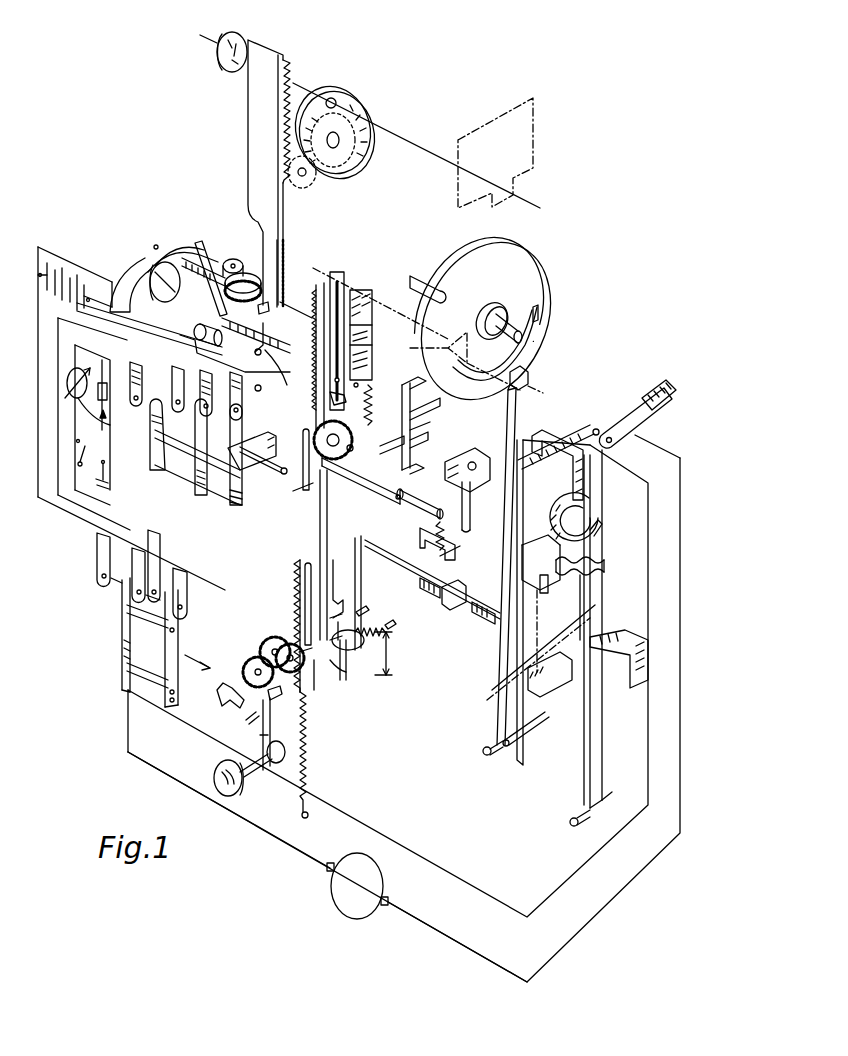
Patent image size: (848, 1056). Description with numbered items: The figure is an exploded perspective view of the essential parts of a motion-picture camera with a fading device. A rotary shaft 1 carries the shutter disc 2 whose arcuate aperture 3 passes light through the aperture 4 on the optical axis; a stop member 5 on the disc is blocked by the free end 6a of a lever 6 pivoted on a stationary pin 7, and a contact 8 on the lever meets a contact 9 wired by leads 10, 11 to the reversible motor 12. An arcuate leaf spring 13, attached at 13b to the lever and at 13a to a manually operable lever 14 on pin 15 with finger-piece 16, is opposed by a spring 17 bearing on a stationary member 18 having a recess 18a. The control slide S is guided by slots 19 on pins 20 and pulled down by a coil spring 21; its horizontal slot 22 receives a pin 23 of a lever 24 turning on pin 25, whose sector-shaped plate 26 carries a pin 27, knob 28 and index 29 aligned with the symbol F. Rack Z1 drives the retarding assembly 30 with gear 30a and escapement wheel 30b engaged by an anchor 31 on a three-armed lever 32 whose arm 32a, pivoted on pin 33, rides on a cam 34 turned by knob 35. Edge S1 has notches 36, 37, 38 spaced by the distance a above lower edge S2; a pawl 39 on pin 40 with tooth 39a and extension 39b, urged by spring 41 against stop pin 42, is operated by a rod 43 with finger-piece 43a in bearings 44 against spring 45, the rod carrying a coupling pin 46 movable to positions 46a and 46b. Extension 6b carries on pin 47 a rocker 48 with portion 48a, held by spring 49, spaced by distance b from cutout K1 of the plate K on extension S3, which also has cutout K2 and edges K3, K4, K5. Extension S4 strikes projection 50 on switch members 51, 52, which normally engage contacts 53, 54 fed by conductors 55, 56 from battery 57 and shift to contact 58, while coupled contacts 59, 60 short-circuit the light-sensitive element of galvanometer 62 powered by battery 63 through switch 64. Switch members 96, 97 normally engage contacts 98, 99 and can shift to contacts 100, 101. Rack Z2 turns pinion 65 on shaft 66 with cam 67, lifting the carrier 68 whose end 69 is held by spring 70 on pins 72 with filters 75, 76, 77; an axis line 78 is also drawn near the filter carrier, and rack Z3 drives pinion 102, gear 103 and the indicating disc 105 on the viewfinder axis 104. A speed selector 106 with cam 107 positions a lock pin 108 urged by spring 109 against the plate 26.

The rotary shaft 1 is at (428, 281).
The shutter disc 2 is at (538, 275).
The arcuate aperture 3 is at (540, 314).
The aperture 4 is at (430, 348).
The stop member 5 is at (528, 378).
The lever 6 is at (497, 551).
The free end of lever 6a is at (515, 395).
The extension of lever 6b is at (472, 476).
The stationary pin 7 is at (488, 757).
The electrical contact 8 is at (595, 428).
The contact 9 is at (632, 423).
The lead 10 is at (460, 881).
The lead 11 is at (468, 947).
The drive means 12 is at (350, 905).
The arcuate leaf spring 13 is at (578, 520).
The connection to lever 14 13a is at (596, 535).
The connection to lever 6 13b is at (586, 478).
The manually operable lever 14 is at (600, 715).
The stationary pin 15 is at (576, 818).
The finger-piece 16 is at (636, 638).
The spring 17 is at (592, 562).
The stationary member 18 is at (550, 553).
The recess 18a is at (552, 545).
The elongated vertical slots 19 is at (302, 440).
The stationary pins 20 is at (296, 490).
The coil spring 21 is at (310, 725).
The horizontal slot 22 is at (262, 392).
The pin 23 is at (263, 362).
The lever 24 is at (236, 330).
The pin 25 is at (256, 356).
The sector-shaped plate portion 26 is at (184, 256).
The pin 27 is at (200, 252).
The knob 28 is at (150, 262).
The index 29 is at (165, 298).
The retarding assembly 30 is at (262, 640).
The larger gear 30a is at (285, 640).
The escapement wheel 30b is at (248, 665).
The double-toothed anchor 31 is at (278, 698).
The lever 32 is at (268, 712).
The arm of lever 32a is at (260, 740).
The stationary pin 33 is at (246, 722).
The cam 34 is at (280, 756).
The knob 35 is at (246, 788).
The notch 36 is at (348, 636).
The notch 37 is at (340, 618).
The notch 38 is at (340, 595).
The pawl 39 is at (360, 585).
The tooth 39a is at (342, 680).
The integral extension 39b is at (416, 540).
The stationary pivot pin 40 is at (386, 672).
The spring 41 is at (392, 622).
The stationary stop pin 42 is at (364, 608).
The elongated rod 43 is at (396, 570).
The finger-piece 43a is at (560, 700).
The stationary bearings 44 is at (428, 578).
The spring 45 is at (452, 594).
The coupling pin 46 is at (578, 603).
The coupling pin position 46a is at (548, 675).
The coupling pin position 46b is at (588, 612).
The pin 47 is at (440, 525).
The rocker 48 is at (455, 460).
The portion of rocker 48a is at (410, 505).
The spring 49 is at (435, 556).
The projection 50 is at (236, 488).
The switch member 51 is at (198, 465).
The switch member 52 is at (240, 503).
The spring contact 53 is at (205, 420).
The spring contact 54 is at (238, 400).
The conductor 55 is at (140, 330).
The conductor 56 is at (160, 340).
The battery 57 is at (70, 262).
The contact 58 is at (175, 393).
The springy contact 59 is at (152, 452).
The springy contact 60 is at (140, 380).
The galvanometer 62 is at (98, 425).
The battery 63 is at (96, 492).
The switch 64 is at (104, 484).
The pinion 65 is at (340, 430).
The rotary shaft 66 is at (283, 435).
The cam 67 is at (108, 402).
The carrier 68 is at (296, 308).
The bottom end of carrier 69 is at (340, 396).
The spring 70 is at (372, 385).
The pins 72 is at (338, 290).
The fading filter 75 is at (362, 292).
The skylight filter 76 is at (370, 330).
The color correcting filter 77 is at (370, 350).
The axis 78 is at (378, 310).
The switch member 96 is at (180, 636).
The switch member 97 is at (122, 625).
The contact 98 is at (130, 555).
The contact 99 is at (188, 585).
The contact 100 is at (97, 556).
The contact 101 is at (158, 565).
The pinion 102 is at (302, 185).
The gear 103 is at (344, 160).
The optical axis of viewfinder 104 is at (408, 140).
The indicating disc 105 is at (366, 108).
The speed-selection means 106 is at (266, 312).
The cam 107 is at (250, 300).
The lock pin 108 is at (155, 270).
The spring 109 is at (232, 278).
The distance a is at (379, 659).
The distance b is at (400, 495).
The symbol F is at (138, 310).
The plate K is at (430, 424).
The cutout K1 is at (398, 452).
The cutout K2 is at (412, 412).
The vertical right edge portion K3 is at (414, 440).
The inclined edge portion K4 is at (418, 462).
The inclined edge portion K5 is at (404, 390).
The control slide S is at (250, 180).
The edge of slide S1 is at (326, 515).
The lower edge of slide S2 is at (306, 686).
The extension of slide S3 is at (347, 480).
The extension of slide S4 is at (255, 466).
The toothed portion Z1 is at (290, 590).
The teeth Z2 is at (316, 360).
The toothed portion Z3 is at (284, 110).